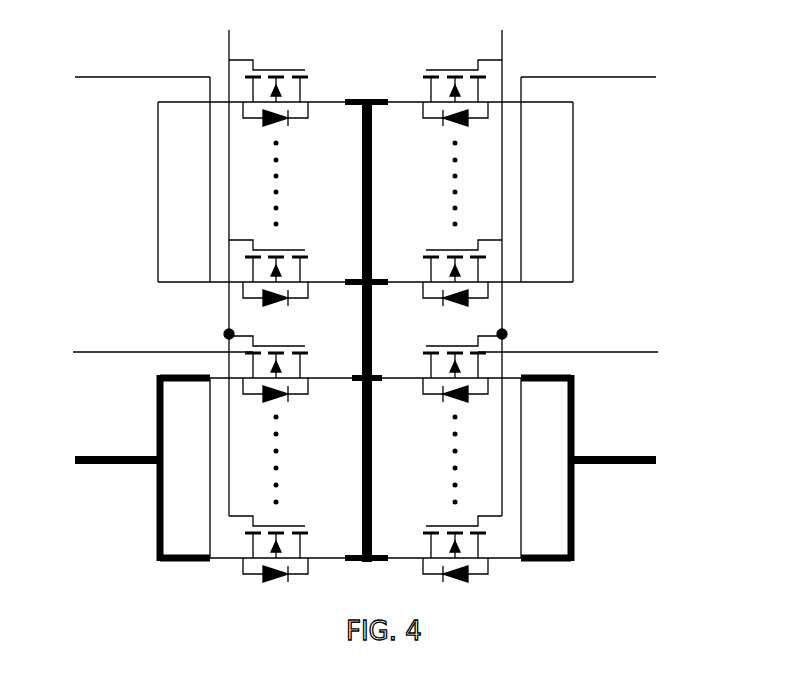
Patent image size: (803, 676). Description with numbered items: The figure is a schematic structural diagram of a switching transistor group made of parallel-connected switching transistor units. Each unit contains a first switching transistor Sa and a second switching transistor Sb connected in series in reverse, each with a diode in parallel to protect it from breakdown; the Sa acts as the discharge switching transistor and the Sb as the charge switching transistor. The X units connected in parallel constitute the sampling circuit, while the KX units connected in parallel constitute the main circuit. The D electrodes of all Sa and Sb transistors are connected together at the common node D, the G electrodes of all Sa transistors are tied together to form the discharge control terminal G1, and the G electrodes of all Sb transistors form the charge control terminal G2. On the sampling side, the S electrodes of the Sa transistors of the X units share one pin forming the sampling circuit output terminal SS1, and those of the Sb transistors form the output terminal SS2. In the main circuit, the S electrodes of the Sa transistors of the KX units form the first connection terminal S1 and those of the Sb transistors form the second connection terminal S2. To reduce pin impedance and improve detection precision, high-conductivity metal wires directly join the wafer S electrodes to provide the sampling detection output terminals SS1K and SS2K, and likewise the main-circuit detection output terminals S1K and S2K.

The D electrode connection D is at (366, 317).
The discharge control terminal G1 is at (251, 267).
The charge control terminal G2 is at (481, 267).
The sampling detection output terminal SS1K is at (114, 173).
The sampling circuit output terminal SS1 is at (158, 186).
The detection output terminal of the main circuit S1K is at (142, 353).
The first connection terminal S1 is at (198, 468).
The sampling detection output terminal SS2K is at (621, 173).
The sampling circuit output terminal SS2 is at (573, 186).
The detection output terminal of the main circuit S2K is at (595, 353).
The second connection terminal S2 is at (536, 468).
The first switching transistor Sa is at (258, 362).
The second switching transistor Sb is at (474, 364).
The sampling circuit switching transistor units X is at (366, 184).
The main circuit switching transistor units KX is at (366, 460).